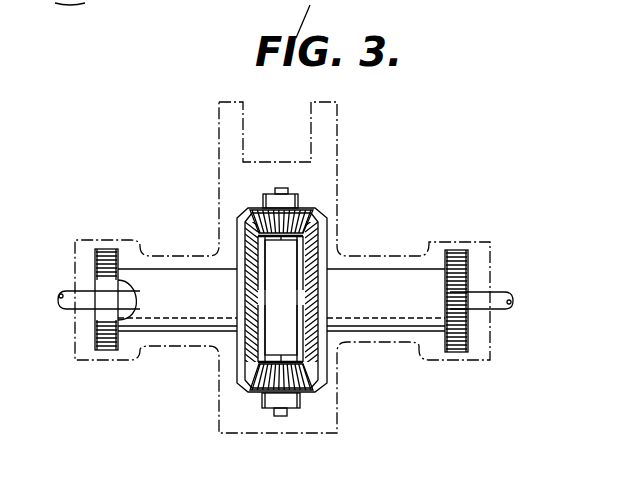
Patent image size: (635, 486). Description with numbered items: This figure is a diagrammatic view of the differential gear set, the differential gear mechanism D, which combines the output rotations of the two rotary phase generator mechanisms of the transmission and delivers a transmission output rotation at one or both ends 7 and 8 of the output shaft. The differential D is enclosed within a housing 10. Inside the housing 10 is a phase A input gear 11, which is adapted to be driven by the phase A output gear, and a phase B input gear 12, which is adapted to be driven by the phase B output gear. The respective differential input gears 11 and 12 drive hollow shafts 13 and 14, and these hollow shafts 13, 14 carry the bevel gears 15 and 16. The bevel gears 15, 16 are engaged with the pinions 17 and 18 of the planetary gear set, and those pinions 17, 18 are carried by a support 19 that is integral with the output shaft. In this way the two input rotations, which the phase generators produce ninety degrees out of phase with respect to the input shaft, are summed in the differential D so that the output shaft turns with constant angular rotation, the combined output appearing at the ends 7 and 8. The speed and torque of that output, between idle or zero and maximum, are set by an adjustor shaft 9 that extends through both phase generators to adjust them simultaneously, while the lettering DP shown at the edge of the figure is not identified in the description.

The output shaft end 7 is at (62, 291).
The output shaft end 8 is at (498, 300).
The adjustor shaft 9 is at (0, 165).
The housing 10 is at (226, 179).
The phase A input gear 11 is at (113, 249).
The phase B input gear 12 is at (458, 352).
The hollow shaft 13 is at (173, 311).
The hollow shaft 14 is at (377, 317).
The bevel gear 15 is at (250, 348).
The bevel gear 16 is at (318, 241).
The pinion 17 is at (308, 213).
The pinion 18 is at (265, 380).
The support 19 is at (287, 275).
The differential gear mechanism D is at (385, 204).
The drive pulley DP is at (62, 313).